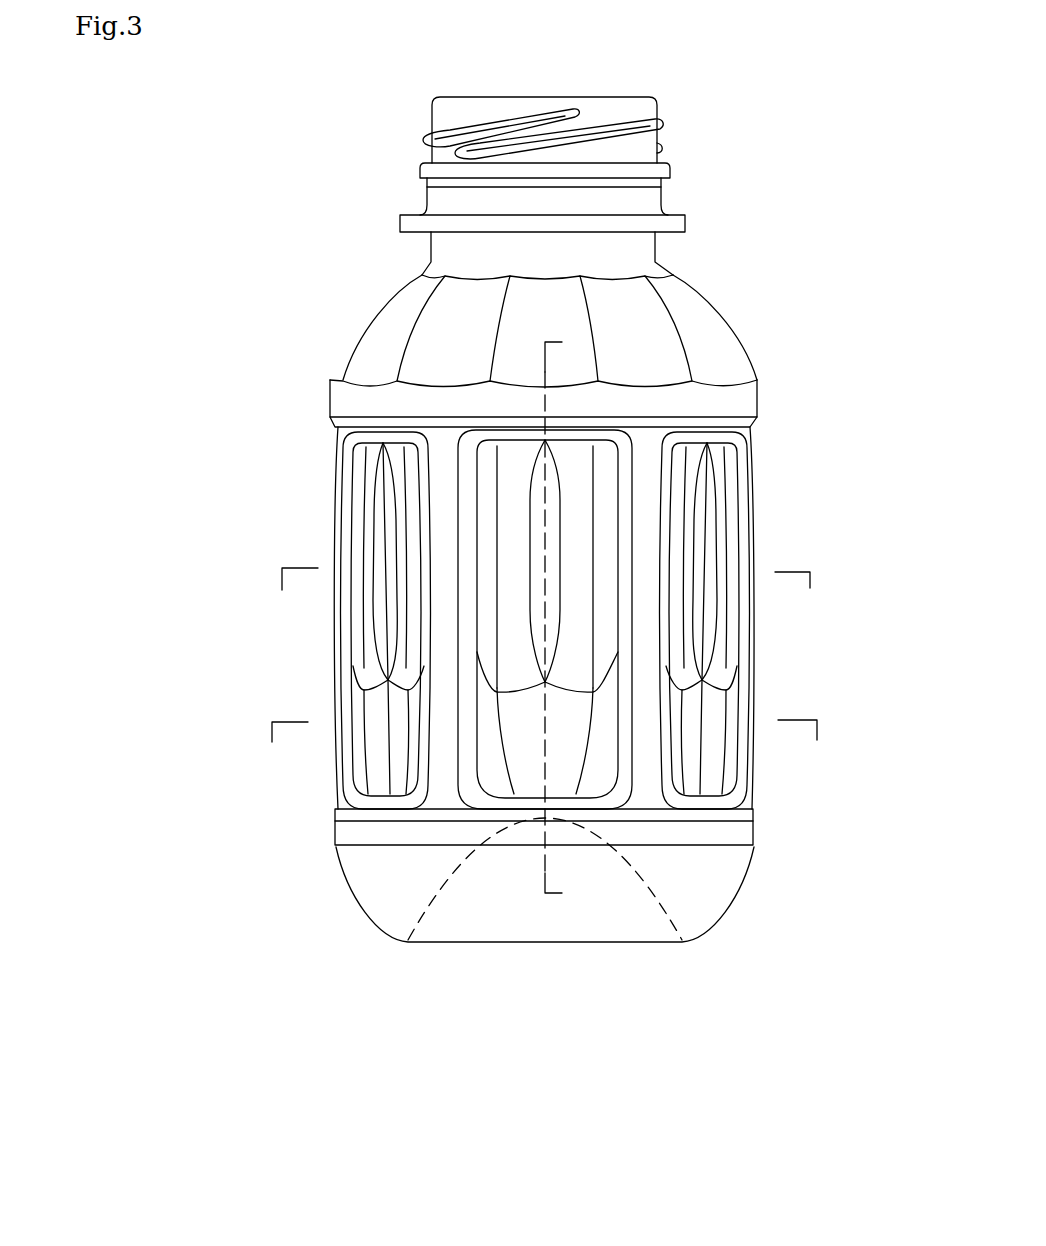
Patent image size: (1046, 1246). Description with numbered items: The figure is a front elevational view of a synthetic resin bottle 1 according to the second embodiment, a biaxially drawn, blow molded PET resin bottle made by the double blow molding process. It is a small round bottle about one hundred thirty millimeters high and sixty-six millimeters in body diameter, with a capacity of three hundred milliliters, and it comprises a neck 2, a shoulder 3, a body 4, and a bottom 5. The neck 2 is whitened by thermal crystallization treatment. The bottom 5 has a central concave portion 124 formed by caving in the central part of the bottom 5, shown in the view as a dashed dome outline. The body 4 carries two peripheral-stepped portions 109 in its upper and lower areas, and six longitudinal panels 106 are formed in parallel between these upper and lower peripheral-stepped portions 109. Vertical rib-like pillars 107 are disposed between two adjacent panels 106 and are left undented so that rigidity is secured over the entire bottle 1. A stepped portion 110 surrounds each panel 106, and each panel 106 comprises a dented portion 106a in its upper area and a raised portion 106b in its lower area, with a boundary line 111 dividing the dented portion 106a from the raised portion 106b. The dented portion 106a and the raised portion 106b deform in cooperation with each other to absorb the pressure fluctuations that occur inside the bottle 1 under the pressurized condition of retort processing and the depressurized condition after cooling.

The bottle 1 is at (800, 240).
The neck 2 is at (440, 110).
The shoulder 3 is at (690, 332).
The body 4 is at (760, 554).
The bottom 5 is at (690, 886).
The longitudinal panel 106 is at (148, 623).
The dented portion 106a is at (512, 593).
The raised portion 106b is at (522, 730).
The pillar 107 is at (447, 528).
The peripheral-stepped portion 109 is at (745, 421).
The stepped portion 110 is at (622, 520).
The boundary line 111 is at (587, 712).
The central concave portion 124 is at (457, 868).